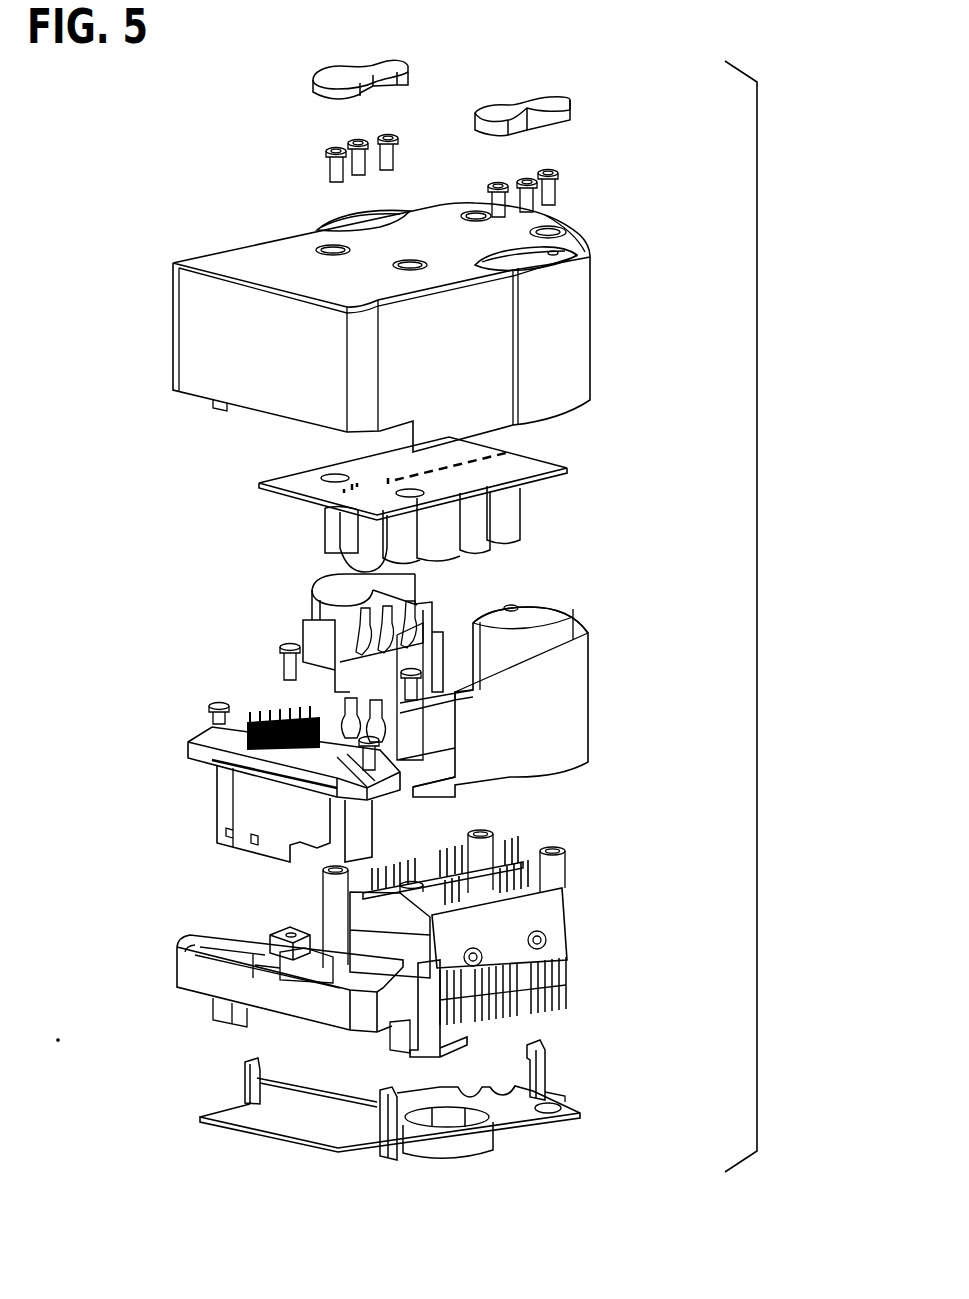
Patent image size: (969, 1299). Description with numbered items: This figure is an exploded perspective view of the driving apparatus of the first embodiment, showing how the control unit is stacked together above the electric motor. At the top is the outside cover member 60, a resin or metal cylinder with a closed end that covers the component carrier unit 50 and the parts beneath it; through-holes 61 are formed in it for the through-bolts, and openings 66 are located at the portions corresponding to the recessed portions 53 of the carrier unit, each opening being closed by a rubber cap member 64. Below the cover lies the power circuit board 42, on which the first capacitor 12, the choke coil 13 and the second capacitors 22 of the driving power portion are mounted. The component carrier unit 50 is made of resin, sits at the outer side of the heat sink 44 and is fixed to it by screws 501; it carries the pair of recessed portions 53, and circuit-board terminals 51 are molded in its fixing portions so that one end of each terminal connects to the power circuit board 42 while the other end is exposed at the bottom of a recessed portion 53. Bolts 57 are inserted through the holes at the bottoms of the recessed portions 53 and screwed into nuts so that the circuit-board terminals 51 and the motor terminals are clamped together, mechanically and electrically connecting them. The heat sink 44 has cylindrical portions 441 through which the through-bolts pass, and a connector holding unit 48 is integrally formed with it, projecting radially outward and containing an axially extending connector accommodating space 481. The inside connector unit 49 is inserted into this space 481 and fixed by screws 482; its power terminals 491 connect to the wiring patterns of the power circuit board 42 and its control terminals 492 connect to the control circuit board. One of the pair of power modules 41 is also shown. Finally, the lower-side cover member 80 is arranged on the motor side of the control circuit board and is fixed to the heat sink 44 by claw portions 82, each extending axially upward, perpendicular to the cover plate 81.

The first capacitor 12 is at (333, 523).
The choke coil 13 is at (372, 537).
The second capacitors 22 is at (500, 498).
The power module 41 is at (548, 915).
The power circuit board 42 is at (533, 463).
The heat sink 44 is at (437, 860).
The connector holding unit 48 is at (195, 975).
The inside connector unit 49 is at (238, 796).
The component carrier unit 50 is at (560, 705).
The circuit-board terminals 51 is at (425, 606).
The recessed portions 53 is at (330, 586).
The bolts 57 is at (378, 135).
The outside cover member 60 is at (228, 262).
The through-holes 61 is at (318, 245).
The cap member 64 is at (340, 72).
The openings 66 is at (352, 213).
The lower-side cover member 80 is at (553, 1100).
The cover plate 81 is at (522, 1120).
The claw portions 82 is at (245, 1072).
The cylindrical portion 441 is at (495, 832).
The connector accommodating space 481 is at (290, 955).
The screws 482 is at (210, 709).
The power terminals 491 is at (347, 705).
The control terminals 492 is at (275, 718).
The screws 501 is at (433, 668).